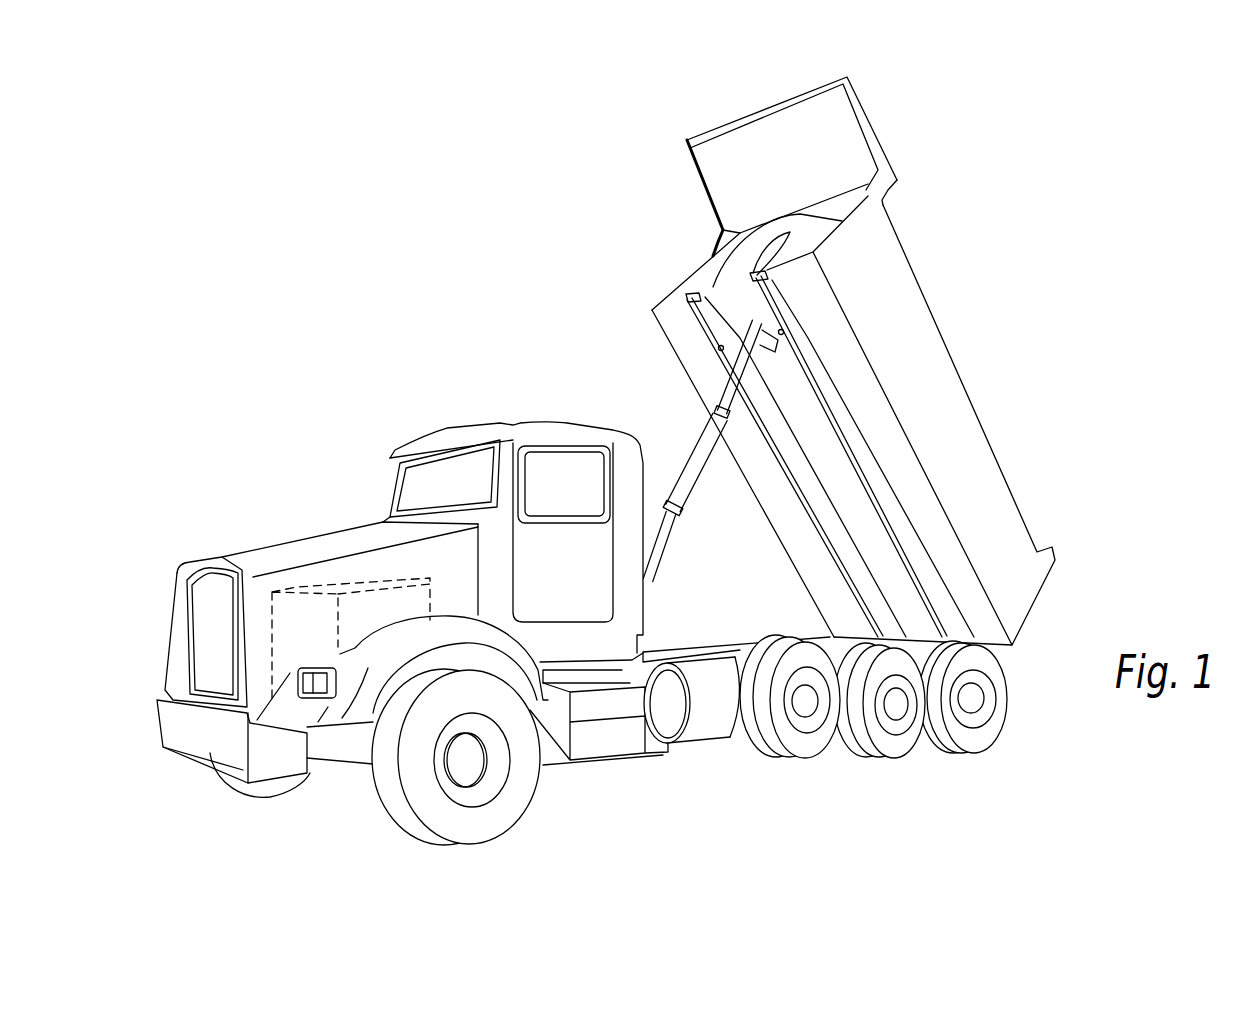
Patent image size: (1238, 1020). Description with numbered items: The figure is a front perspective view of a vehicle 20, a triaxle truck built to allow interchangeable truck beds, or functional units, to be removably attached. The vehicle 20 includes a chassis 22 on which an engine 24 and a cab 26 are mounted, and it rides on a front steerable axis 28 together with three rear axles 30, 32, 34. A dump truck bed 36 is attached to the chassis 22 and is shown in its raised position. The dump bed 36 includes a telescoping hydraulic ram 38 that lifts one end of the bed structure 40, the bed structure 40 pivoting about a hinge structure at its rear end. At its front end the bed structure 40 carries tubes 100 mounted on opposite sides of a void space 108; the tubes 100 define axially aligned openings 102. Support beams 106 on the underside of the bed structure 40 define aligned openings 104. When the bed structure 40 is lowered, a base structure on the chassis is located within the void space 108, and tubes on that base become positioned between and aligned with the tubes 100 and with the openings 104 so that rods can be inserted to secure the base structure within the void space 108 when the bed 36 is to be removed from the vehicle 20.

The vehicle 20 is at (275, 322).
The chassis 22 is at (720, 647).
The engine 24 is at (313, 583).
The cab 26 is at (550, 440).
The front steerable axis 28 is at (472, 767).
The rear axle 30 is at (808, 705).
The rear axle 32 is at (896, 708).
The rear axle 34 is at (974, 702).
The dump truck bed 36 is at (687, 140).
The telescoping hydraulic ram 38 is at (692, 467).
The bed structure 40 is at (943, 383).
The tubes 100 is at (727, 292).
The openings 102 is at (687, 296).
The openings 104 is at (716, 348).
The support beams 106 is at (800, 470).
The void space 108 is at (735, 285).